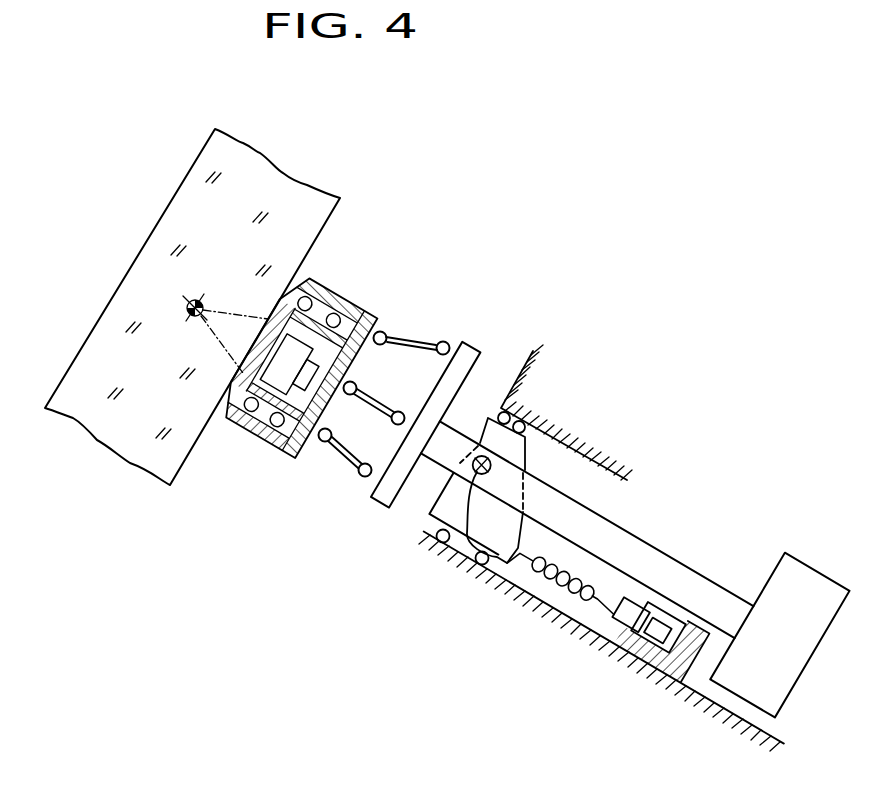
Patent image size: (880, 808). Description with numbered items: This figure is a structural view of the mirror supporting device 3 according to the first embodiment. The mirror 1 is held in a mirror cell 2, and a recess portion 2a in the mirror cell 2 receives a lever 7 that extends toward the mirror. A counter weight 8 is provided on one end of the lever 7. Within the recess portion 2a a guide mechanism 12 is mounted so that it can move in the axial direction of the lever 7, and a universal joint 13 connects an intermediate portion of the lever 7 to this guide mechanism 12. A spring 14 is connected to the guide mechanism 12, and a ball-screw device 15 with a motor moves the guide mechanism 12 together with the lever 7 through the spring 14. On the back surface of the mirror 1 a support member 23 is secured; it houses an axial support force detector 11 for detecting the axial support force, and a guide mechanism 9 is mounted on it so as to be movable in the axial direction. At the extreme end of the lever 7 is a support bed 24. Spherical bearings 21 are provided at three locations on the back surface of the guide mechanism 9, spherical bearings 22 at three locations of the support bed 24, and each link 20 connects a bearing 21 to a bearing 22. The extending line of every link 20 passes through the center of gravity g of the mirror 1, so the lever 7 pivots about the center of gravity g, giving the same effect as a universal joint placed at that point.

The mirror 1 is at (108, 447).
The center of gravity of the mirror g is at (187, 310).
The mirror cell 2 is at (428, 533).
The recess portion 2a is at (589, 463).
The mirror supporting device 3 is at (657, 382).
The lever 7 is at (435, 463).
The counter weight 8 is at (743, 702).
The guide mechanism 9 is at (281, 372).
The axial support force detector 11 is at (292, 368).
The guide mechanism 12 is at (497, 557).
The universal joint 13 is at (465, 562).
The spring 14 is at (565, 587).
The ball-screw device 15 is at (642, 645).
The link 20 is at (415, 374).
The spherical bearings 21 is at (388, 332).
The spherical bearings 22 is at (452, 343).
The support member 23 is at (265, 443).
The support bed 24 is at (477, 350).